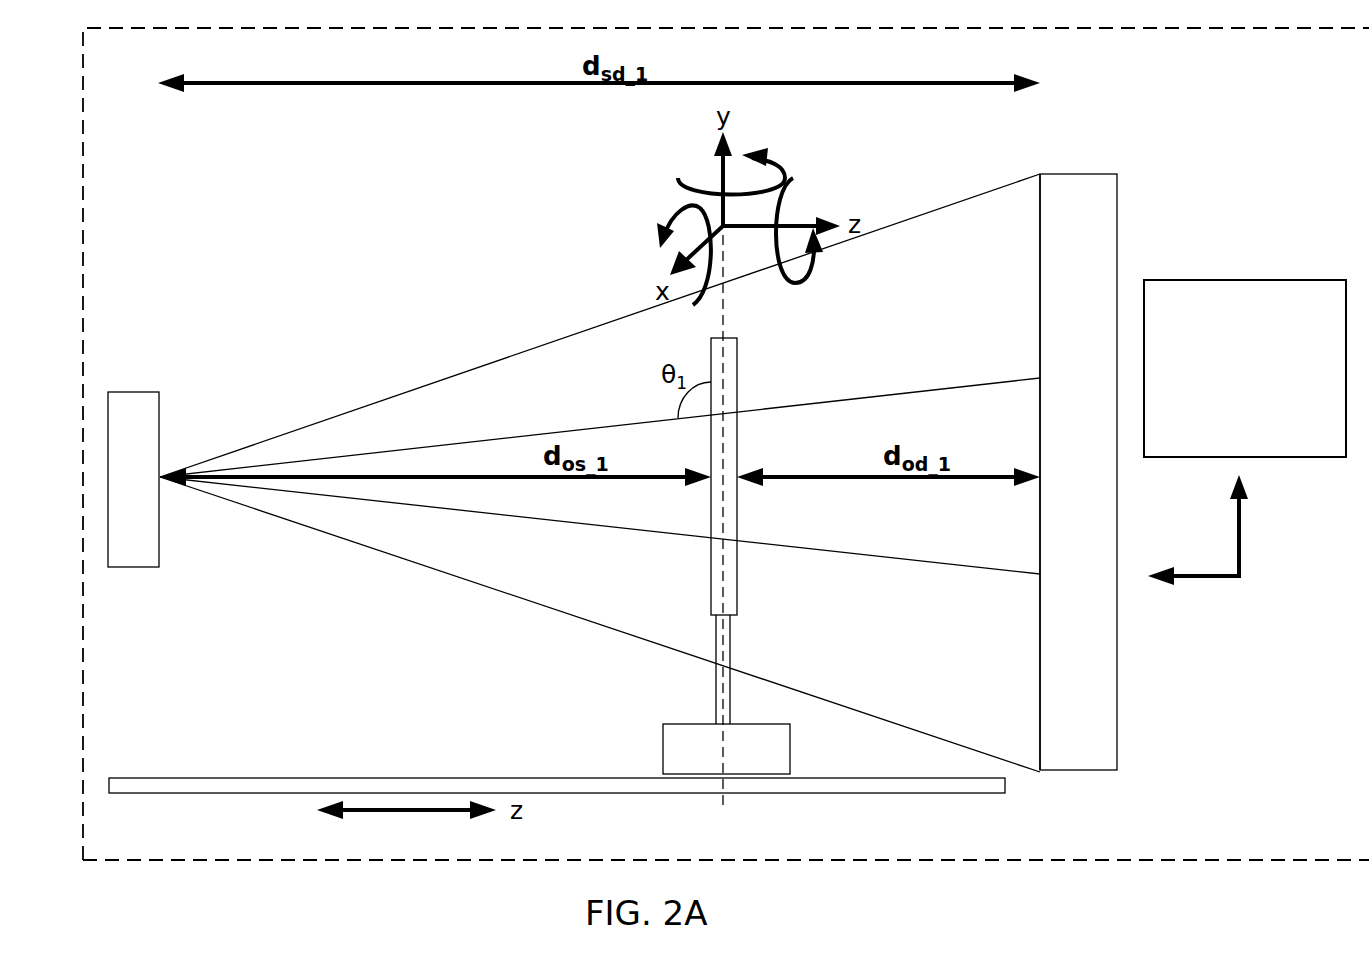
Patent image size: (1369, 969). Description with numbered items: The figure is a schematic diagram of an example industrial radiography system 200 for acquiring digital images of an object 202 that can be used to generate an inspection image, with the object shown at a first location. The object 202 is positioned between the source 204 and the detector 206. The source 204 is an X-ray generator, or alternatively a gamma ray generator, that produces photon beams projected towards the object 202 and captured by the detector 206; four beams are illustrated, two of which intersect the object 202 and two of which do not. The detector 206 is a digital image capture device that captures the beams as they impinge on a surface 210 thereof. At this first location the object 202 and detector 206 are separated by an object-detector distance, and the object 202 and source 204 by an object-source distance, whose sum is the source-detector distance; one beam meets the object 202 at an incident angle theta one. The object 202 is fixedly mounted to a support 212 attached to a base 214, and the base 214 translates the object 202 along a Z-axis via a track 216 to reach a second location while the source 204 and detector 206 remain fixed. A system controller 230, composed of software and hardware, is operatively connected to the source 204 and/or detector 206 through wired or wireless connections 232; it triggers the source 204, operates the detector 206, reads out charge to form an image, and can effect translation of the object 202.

The industrial radiography system 200 is at (83, 246).
The object 202 is at (790, 588).
The source 204 is at (133, 567).
The detector 206 is at (1082, 770).
The surface 210 is at (1040, 279).
The support 212 is at (717, 692).
The base 214 is at (663, 745).
The track 216 is at (362, 778).
The system controller 230 is at (1245, 368).
The connections 232 is at (1220, 580).